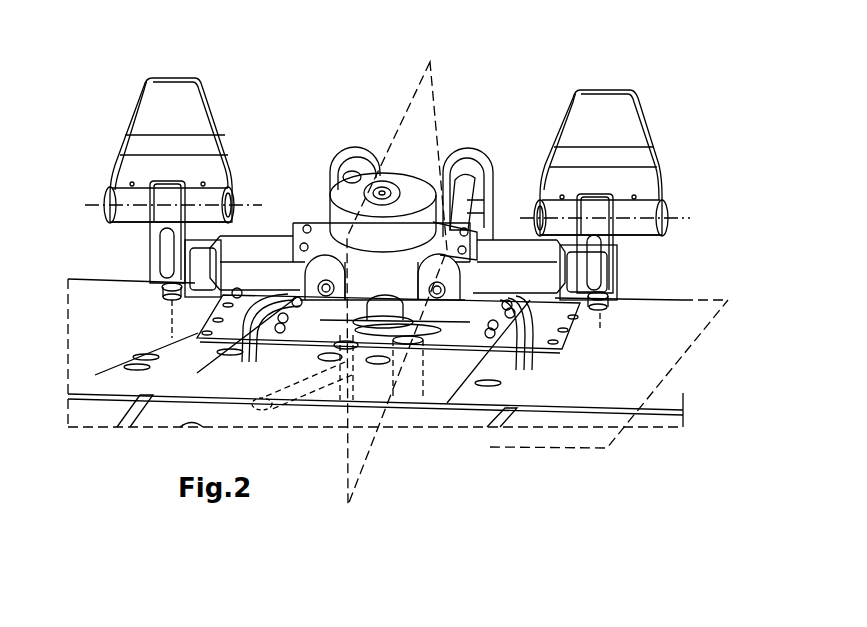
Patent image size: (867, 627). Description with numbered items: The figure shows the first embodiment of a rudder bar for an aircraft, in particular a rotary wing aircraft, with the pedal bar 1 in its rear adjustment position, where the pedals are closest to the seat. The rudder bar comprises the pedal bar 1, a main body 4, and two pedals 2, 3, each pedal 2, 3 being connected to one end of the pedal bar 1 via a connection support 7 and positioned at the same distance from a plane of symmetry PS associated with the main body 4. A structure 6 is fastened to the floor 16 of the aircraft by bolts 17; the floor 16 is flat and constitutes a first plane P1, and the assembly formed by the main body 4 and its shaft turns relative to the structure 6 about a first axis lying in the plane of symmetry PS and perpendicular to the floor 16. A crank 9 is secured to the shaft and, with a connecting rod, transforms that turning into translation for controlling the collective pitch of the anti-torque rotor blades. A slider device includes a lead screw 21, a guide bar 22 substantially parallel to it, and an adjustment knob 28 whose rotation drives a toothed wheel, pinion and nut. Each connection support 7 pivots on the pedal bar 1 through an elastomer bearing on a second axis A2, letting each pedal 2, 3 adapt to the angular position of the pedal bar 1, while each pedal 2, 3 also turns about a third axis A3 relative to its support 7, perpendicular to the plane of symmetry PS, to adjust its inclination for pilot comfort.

The pedal bar 1 is at (267, 247).
The pedal 2 is at (607, 105).
The pedal 3 is at (178, 93).
The main body 4 is at (480, 183).
The structure 6 is at (442, 333).
The connection support 7 is at (160, 266).
The crank 9 is at (422, 380).
The floor 16 is at (593, 390).
The bolts 17 is at (388, 342).
The lead screw 21 is at (337, 186).
The guide bar 22 is at (460, 180).
The adjustment knob 28 is at (413, 187).
The second axis A2 is at (172, 333).
The third axis A3 is at (97, 203).
The first plane P1 is at (714, 314).
The plane of symmetry PS is at (416, 100).